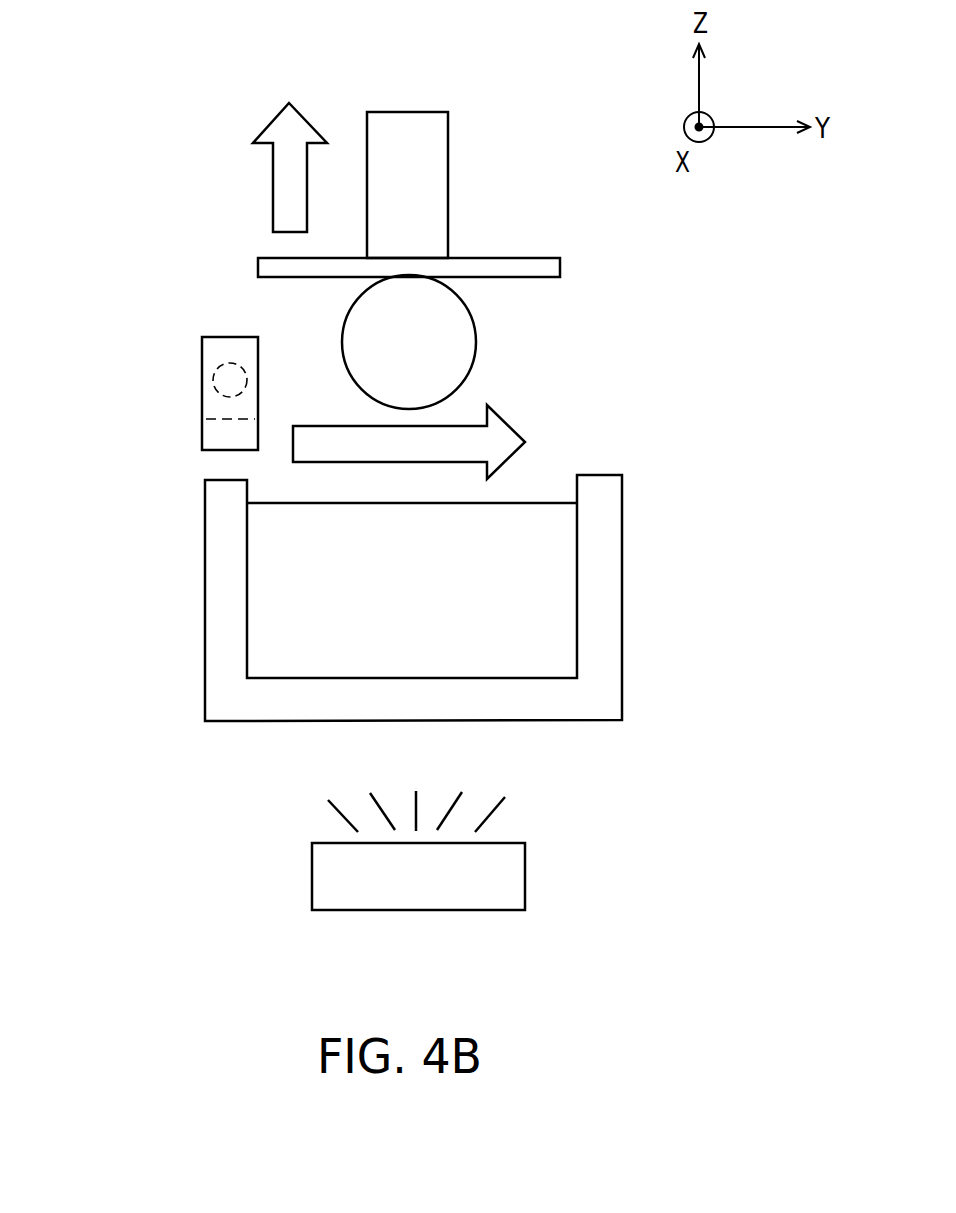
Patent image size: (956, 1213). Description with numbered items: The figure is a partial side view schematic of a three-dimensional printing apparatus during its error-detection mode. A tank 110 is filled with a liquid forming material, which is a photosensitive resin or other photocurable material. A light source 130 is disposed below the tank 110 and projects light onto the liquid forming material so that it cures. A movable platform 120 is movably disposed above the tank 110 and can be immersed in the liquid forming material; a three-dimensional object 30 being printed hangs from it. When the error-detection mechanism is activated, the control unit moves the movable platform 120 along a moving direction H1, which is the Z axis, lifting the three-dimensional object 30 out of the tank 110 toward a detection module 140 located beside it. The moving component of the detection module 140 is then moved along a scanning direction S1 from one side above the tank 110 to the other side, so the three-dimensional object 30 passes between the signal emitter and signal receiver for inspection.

The movable platform 120 is at (437, 183).
The three-dimensional object 30 is at (478, 352).
The detection module 140 is at (202, 392).
The tank 110 is at (622, 578).
The light source 130 is at (525, 878).
The moving direction H1 is at (273, 187).
The scanning direction S1 is at (508, 423).